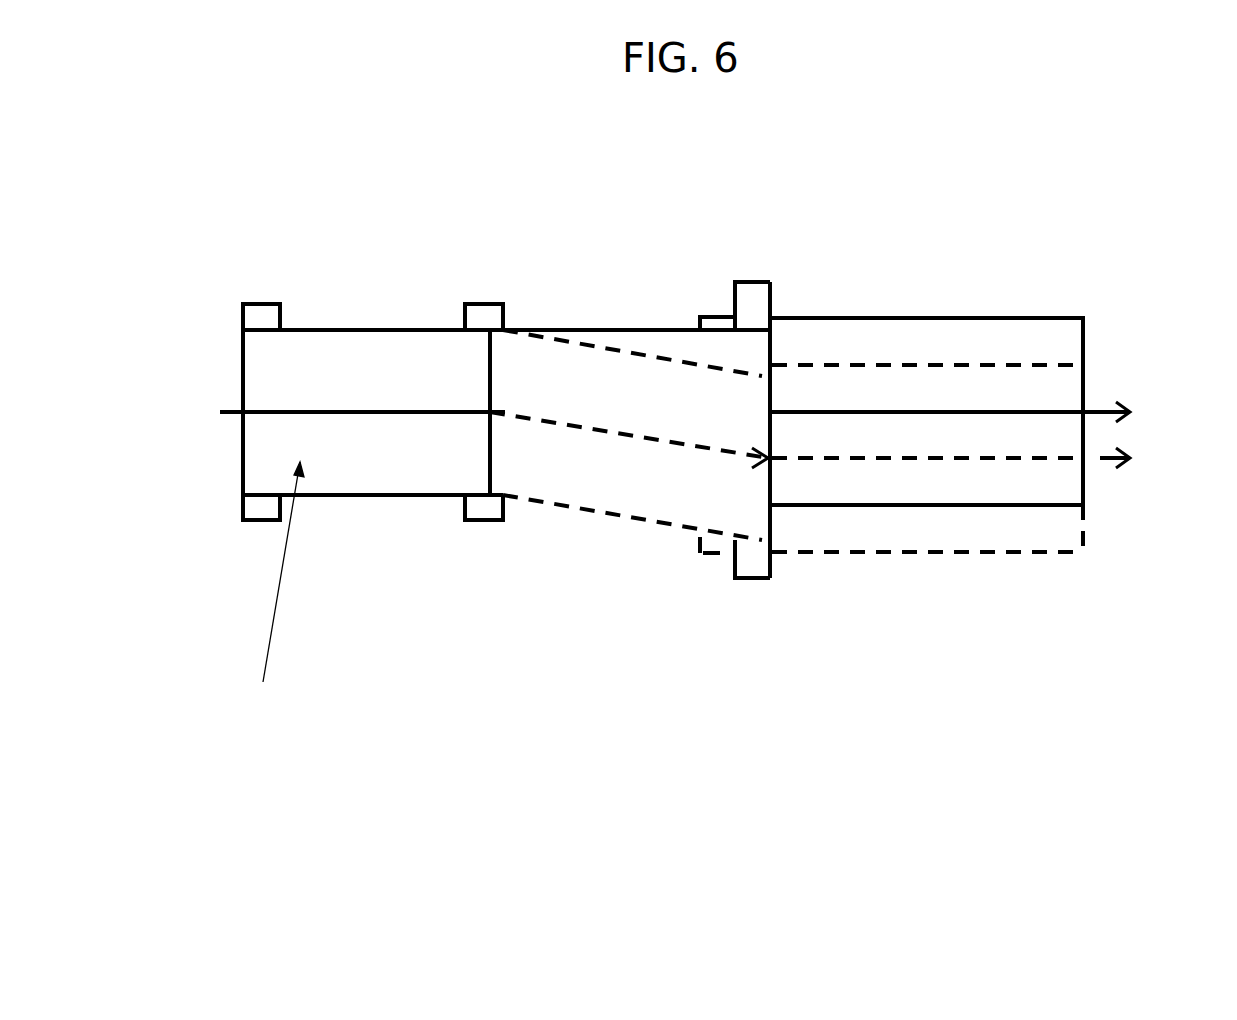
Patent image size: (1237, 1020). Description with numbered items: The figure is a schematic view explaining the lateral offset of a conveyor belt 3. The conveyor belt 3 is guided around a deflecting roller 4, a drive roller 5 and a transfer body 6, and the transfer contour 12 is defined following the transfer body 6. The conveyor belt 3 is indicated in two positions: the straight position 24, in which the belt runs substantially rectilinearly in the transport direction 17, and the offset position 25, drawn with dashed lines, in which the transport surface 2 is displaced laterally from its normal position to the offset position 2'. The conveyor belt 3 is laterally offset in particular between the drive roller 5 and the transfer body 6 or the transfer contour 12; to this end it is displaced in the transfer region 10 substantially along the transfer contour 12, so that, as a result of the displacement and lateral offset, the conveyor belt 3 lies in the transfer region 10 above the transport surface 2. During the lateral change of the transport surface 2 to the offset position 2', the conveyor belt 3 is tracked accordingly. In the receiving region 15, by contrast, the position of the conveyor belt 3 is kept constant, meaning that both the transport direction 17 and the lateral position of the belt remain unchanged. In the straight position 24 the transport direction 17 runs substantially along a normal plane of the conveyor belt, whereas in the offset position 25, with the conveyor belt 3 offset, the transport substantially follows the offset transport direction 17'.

The transport surface 2 is at (962, 390).
The offset position of the transport surface 2' is at (968, 528).
The conveyor belt 3 is at (322, 352).
The deflecting roller 4 is at (260, 510).
The drive roller 5 is at (478, 510).
The transfer body 6 is at (748, 565).
The transfer region 10 is at (745, 350).
The transfer contour 12 is at (772, 345).
The receiving region 15 is at (272, 595).
The transport direction 17 is at (713, 504).
The offset transport direction 17' is at (951, 555).
The straight position 24 is at (594, 327).
The offset position 25 is at (581, 512).